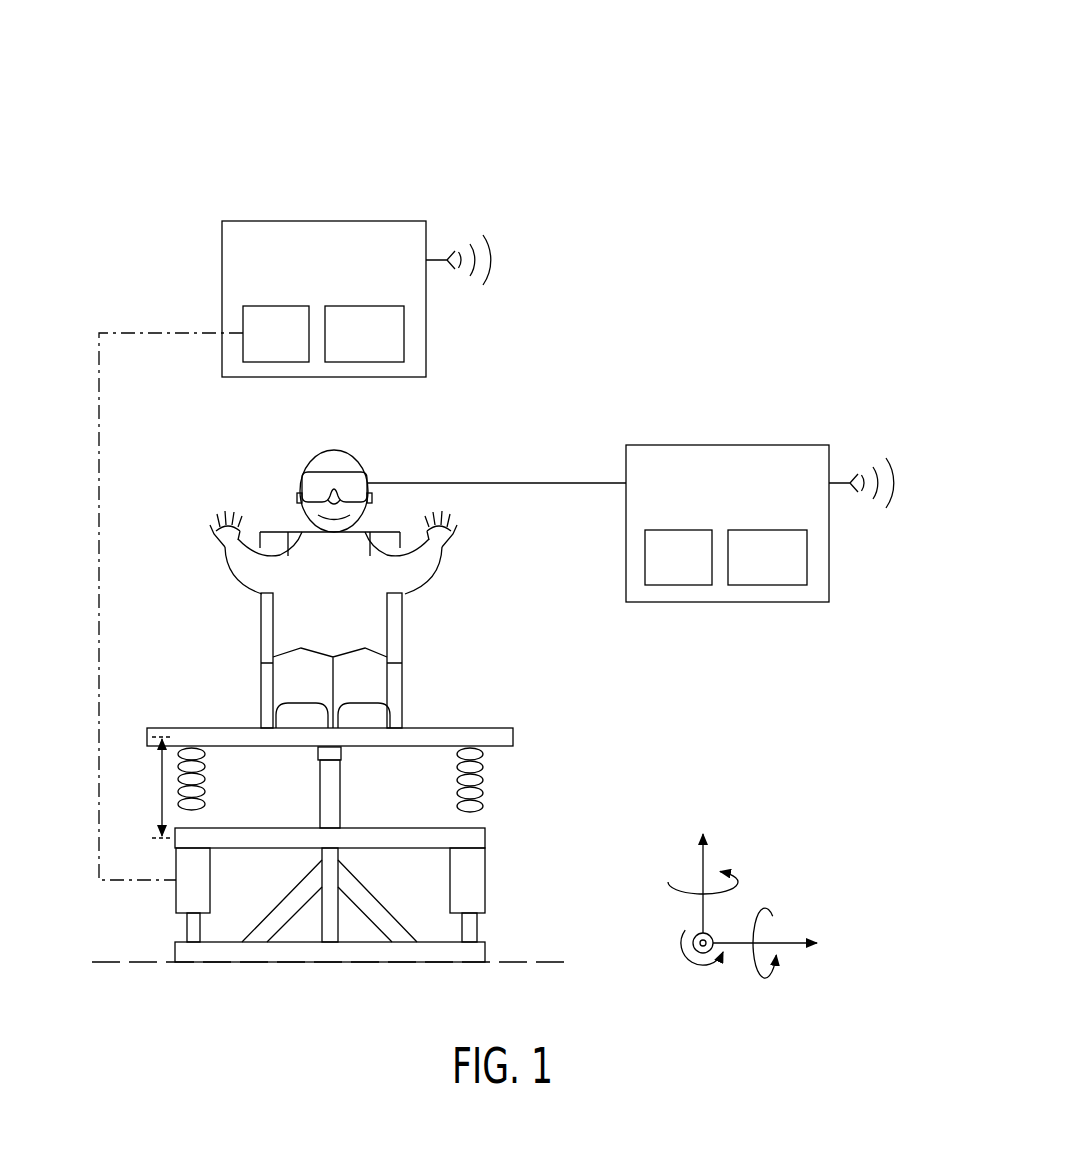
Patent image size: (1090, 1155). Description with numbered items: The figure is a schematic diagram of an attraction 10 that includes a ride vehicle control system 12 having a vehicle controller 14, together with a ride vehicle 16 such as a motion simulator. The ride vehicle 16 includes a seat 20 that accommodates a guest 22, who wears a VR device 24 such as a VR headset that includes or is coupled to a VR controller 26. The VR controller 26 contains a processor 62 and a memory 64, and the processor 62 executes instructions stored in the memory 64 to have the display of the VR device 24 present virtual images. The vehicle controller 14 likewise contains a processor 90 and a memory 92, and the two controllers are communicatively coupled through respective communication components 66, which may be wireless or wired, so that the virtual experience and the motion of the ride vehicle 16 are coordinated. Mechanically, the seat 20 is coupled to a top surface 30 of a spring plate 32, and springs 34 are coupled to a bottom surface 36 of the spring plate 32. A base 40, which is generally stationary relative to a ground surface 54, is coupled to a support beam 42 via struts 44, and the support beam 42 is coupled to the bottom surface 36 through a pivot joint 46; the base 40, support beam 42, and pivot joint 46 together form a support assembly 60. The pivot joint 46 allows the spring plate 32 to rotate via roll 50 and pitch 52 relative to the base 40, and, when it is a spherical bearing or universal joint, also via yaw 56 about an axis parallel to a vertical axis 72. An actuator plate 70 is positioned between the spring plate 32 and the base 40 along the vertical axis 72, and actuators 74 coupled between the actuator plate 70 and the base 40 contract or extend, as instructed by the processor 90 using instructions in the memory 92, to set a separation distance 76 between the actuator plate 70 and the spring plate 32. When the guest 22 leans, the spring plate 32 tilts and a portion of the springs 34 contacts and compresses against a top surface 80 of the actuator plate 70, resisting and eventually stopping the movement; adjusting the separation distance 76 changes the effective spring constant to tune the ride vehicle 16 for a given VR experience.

The attraction 10 is at (661, 63).
The ride vehicle control system 12 is at (619, 153).
The vehicle controller 14 is at (262, 531).
The ride vehicle 16 is at (358, 765).
The seat 20 is at (333, 578).
The guest 22 is at (322, 458).
The VR device 24 is at (300, 487).
The VR controller 26 is at (598, 528).
The top surface 30 is at (437, 726).
The spring plate 32 is at (500, 722).
The springs 34 is at (205, 808).
The bottom surface 36 is at (408, 746).
The base 40 is at (494, 952).
The support beam 42 is at (347, 923).
The struts 44 is at (400, 911).
The pivot joint 46 is at (350, 754).
The roll 50 is at (720, 923).
The pitch 52 is at (758, 975).
The ground surface 54 is at (152, 960).
The yaw 56 is at (735, 890).
The support assembly 60 is at (400, 873).
The processor 62 is at (677, 586).
The memory 64 is at (762, 586).
The communication components 66 is at (437, 259).
The actuator plate 70 is at (494, 842).
The vertical axis 72 is at (712, 833).
The actuators 74 is at (211, 897).
The separation distance 76 is at (162, 806).
The top surface 80 is at (433, 827).
The processor 90 is at (275, 363).
The memory 92 is at (362, 363).